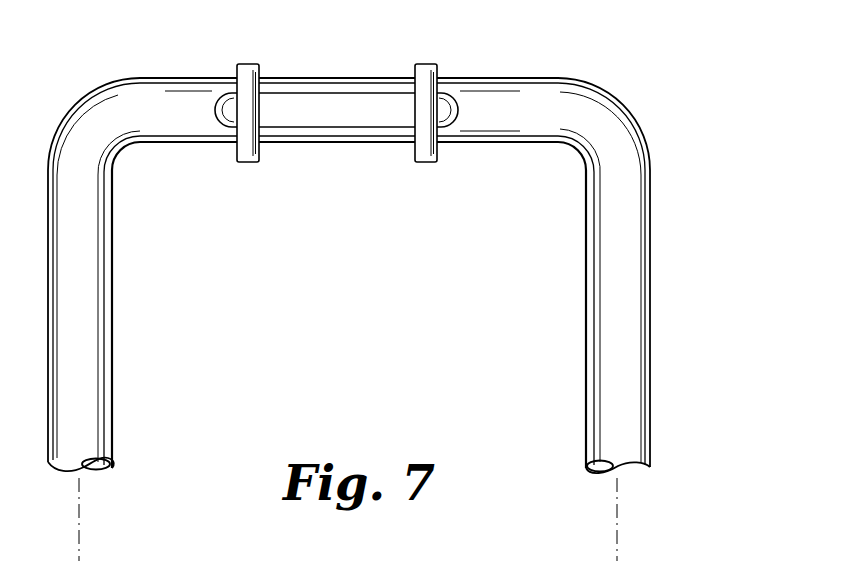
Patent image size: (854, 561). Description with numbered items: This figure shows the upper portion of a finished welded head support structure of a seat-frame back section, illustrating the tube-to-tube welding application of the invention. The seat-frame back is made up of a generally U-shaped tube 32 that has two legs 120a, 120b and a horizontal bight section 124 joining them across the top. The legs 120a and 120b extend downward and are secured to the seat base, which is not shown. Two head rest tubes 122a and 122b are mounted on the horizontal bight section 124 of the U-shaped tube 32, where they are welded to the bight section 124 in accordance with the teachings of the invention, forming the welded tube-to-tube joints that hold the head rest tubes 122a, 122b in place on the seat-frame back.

The "U" shaped tube 32 is at (154, 98).
The leg 120a is at (102, 338).
The leg 120b is at (648, 283).
The head rest tube 122a is at (255, 64).
The head rest tube 122b is at (428, 64).
The horizontal bight section 124 is at (333, 145).